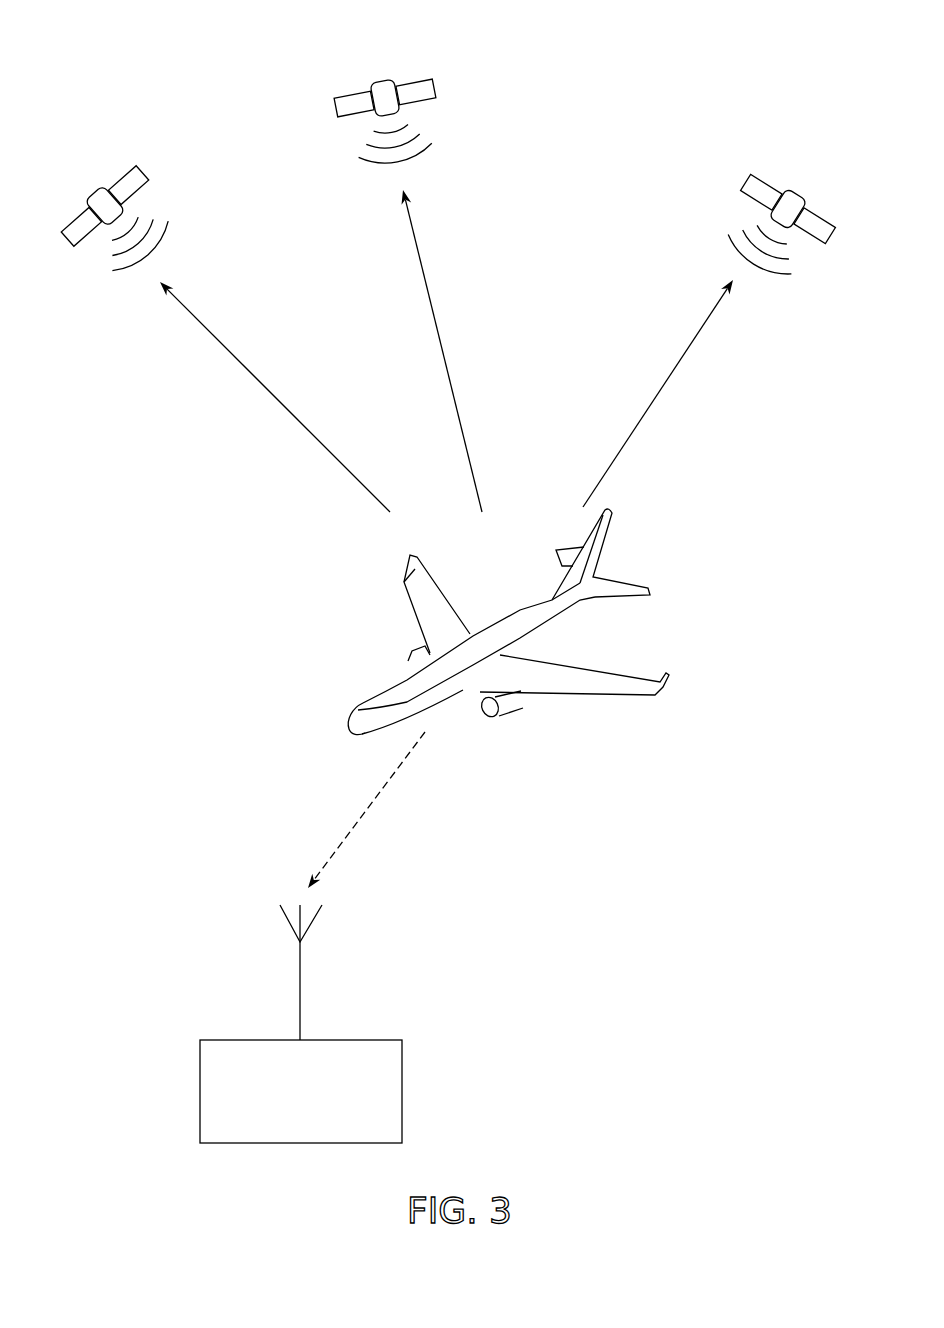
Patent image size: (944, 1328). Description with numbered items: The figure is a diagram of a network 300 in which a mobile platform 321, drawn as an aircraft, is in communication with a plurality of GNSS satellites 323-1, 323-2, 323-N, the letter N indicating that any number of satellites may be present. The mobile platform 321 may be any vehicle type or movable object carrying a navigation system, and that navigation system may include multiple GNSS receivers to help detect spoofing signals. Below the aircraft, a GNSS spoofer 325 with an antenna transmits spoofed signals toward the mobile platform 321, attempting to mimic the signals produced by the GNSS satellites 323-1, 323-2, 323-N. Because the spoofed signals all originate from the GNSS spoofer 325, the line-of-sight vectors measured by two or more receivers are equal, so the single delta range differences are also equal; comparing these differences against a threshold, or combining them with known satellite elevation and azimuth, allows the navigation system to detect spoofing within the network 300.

The mobile platform 321 is at (378, 690).
The GNSS satellite 323-1 is at (131, 166).
The GNSS satellite 323-2 is at (403, 81).
The GNSS satellite 323-N is at (756, 176).
The GNSS spoofer 325 is at (327, 1118).
The network 300 is at (748, 980).